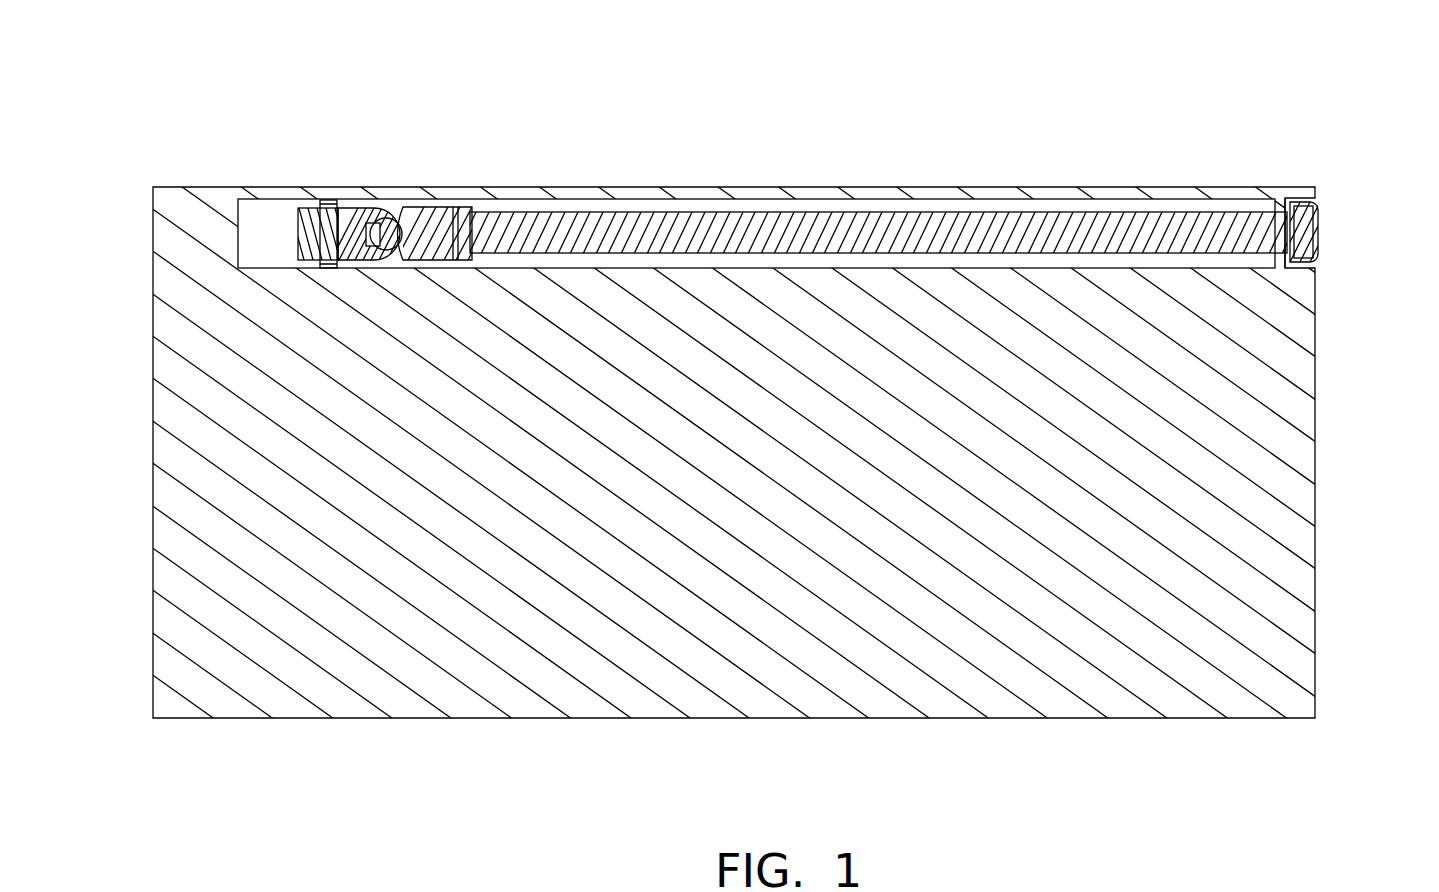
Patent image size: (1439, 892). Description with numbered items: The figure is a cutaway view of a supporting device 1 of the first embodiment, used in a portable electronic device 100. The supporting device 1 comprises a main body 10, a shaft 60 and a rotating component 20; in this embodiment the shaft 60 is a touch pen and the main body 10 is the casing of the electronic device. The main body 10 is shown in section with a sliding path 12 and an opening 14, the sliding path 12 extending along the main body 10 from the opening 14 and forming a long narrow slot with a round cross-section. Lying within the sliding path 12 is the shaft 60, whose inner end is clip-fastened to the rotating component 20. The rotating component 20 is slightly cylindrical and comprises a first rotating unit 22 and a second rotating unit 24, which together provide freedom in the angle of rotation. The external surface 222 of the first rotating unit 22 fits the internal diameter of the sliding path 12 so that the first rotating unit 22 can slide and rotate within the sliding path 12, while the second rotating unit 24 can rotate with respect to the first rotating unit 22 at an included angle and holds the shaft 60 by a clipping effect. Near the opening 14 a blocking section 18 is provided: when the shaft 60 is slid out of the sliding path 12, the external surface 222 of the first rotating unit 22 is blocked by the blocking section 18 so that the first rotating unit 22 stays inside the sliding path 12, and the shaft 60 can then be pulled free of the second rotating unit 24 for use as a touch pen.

The portable electronic device 100 is at (746, 446).
The main body 10 is at (197, 210).
The sliding path 12 is at (827, 197).
The opening 14 is at (1332, 201).
The blocking section 18 is at (1283, 203).
The supporting device 1 is at (789, 166).
The shaft 60 is at (1008, 235).
The first rotating unit 22 is at (313, 202).
The external surface 222 is at (327, 198).
The rotating component 20 is at (390, 197).
The second rotating unit 24 is at (415, 203).